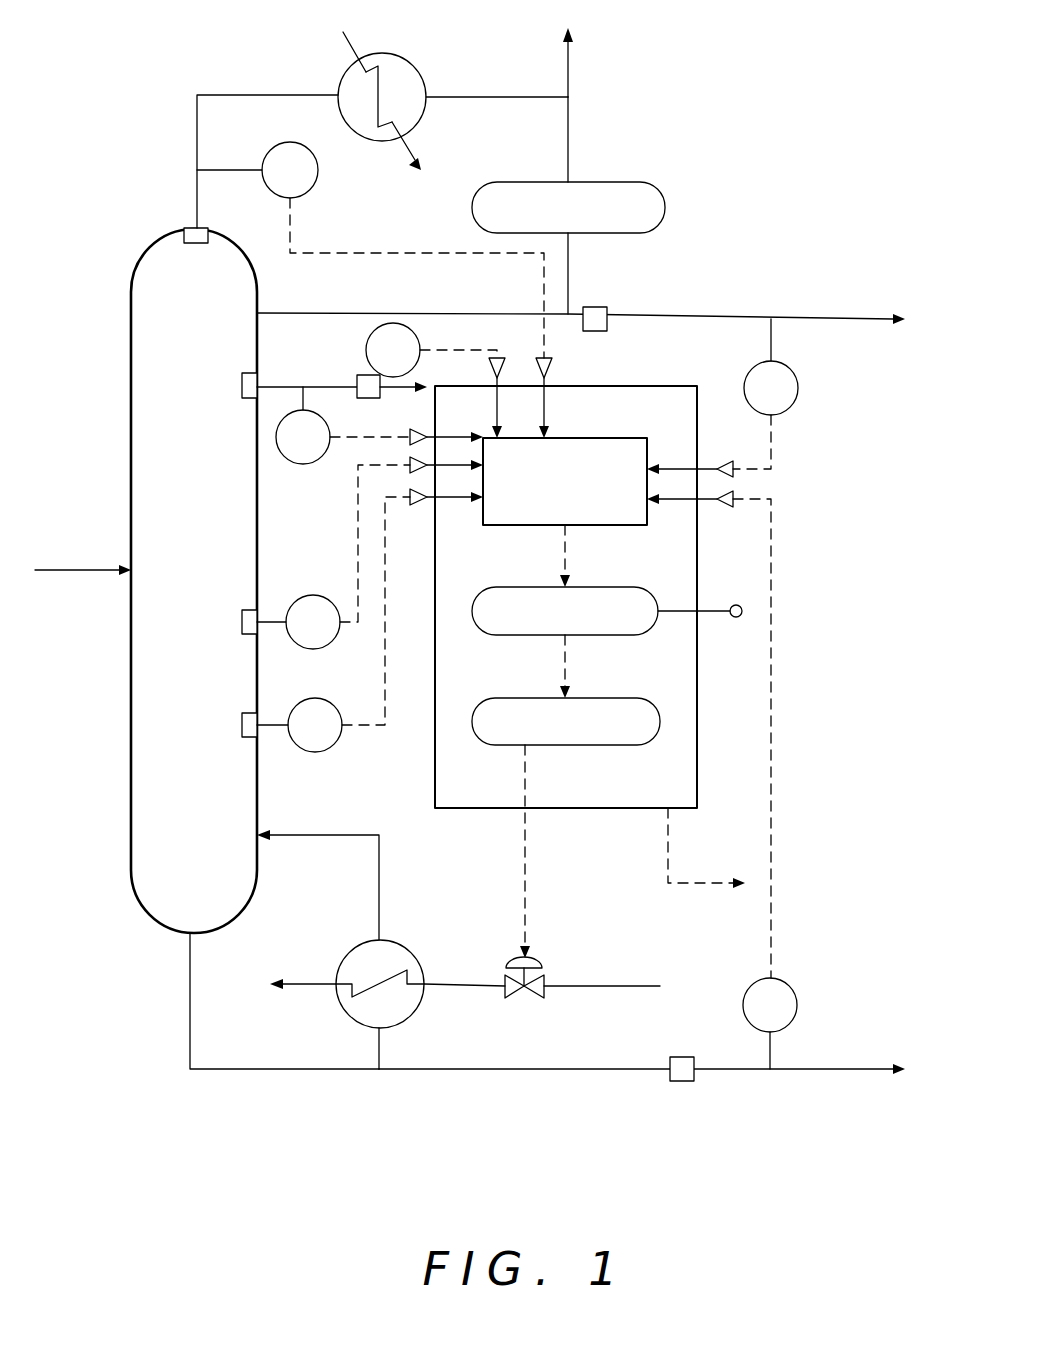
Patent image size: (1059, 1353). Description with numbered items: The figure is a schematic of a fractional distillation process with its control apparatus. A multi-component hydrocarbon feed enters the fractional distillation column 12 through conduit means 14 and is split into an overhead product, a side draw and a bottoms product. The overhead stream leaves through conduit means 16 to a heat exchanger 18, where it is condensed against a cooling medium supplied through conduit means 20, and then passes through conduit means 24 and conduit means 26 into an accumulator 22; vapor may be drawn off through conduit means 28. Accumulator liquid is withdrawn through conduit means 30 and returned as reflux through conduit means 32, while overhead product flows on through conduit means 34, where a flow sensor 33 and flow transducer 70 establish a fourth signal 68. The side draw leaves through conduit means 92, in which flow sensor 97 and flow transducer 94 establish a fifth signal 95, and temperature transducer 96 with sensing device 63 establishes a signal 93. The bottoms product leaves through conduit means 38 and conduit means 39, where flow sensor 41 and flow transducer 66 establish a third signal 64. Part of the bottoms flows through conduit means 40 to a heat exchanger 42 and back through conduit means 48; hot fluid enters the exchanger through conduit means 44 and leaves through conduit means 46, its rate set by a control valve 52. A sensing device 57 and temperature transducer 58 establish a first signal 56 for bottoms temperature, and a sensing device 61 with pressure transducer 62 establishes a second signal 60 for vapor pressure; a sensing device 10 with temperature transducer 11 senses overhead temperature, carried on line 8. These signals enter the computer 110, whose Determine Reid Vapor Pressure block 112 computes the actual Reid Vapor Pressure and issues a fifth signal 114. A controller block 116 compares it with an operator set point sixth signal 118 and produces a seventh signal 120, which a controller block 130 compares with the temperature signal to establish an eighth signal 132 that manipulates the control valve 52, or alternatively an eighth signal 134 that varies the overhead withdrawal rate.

The signal line from temperature transducer 11 8 is at (440, 250).
The sensing device 10 is at (200, 245).
The temperature transducer 11 is at (283, 145).
The fractional distillation column 12 is at (131, 283).
The conduit means 14 is at (78, 578).
The conduit means 16 is at (197, 115).
The heat exchanger 18 is at (410, 58).
The conduit means 20 is at (343, 40).
The accumulator 22 is at (665, 190).
The conduit means 24 is at (470, 97).
The conduit means 26 is at (570, 133).
The conduit means 28 is at (570, 70).
The conduit means 30 is at (570, 278).
The conduit means 32 is at (440, 312).
The flow sensor 33 is at (602, 335).
The conduit means 34 is at (627, 317).
The conduit means 38 is at (285, 1069).
The conduit means 39 is at (605, 1072).
The conduit means 40 is at (375, 1050).
The flow sensor 41 is at (687, 1057).
The heat exchanger 42 is at (400, 945).
The conduit means 44 is at (470, 990).
The conduit means 46 is at (313, 980).
The conduit means 48 is at (340, 838).
The control valve 52 is at (540, 962).
The first signal 56 is at (372, 735).
The sensing device 57 is at (246, 737).
The temperature transducer 58 is at (312, 698).
The second signal 60 is at (358, 560).
The sensing device 61 is at (246, 610).
The pressure transducer 62 is at (302, 598).
The sensing device 63 is at (242, 375).
The third signal 64 is at (775, 730).
The flow transducer 66 is at (794, 985).
The fourth signal 68 is at (775, 448).
The flow transducer 70 is at (798, 388).
The conduit means 92 is at (330, 388).
The first signal 93 is at (395, 393).
The flow transducer 94 is at (420, 340).
The fifth signal 95 is at (493, 348).
The temperature transducer 96 is at (318, 465).
The flow sensor 97 is at (360, 374).
The computer 110 is at (483, 812).
The Determine Reid Vapor Pressure block 112 is at (600, 437).
The fifth output signal 114 is at (560, 556).
The controller block 116 is at (608, 587).
The sixth signal 118 is at (715, 618).
The seventh signal 120 is at (560, 666).
The controller block 130 is at (615, 746).
The eighth signal 132 is at (530, 848).
The eighth signal 134 is at (660, 883).